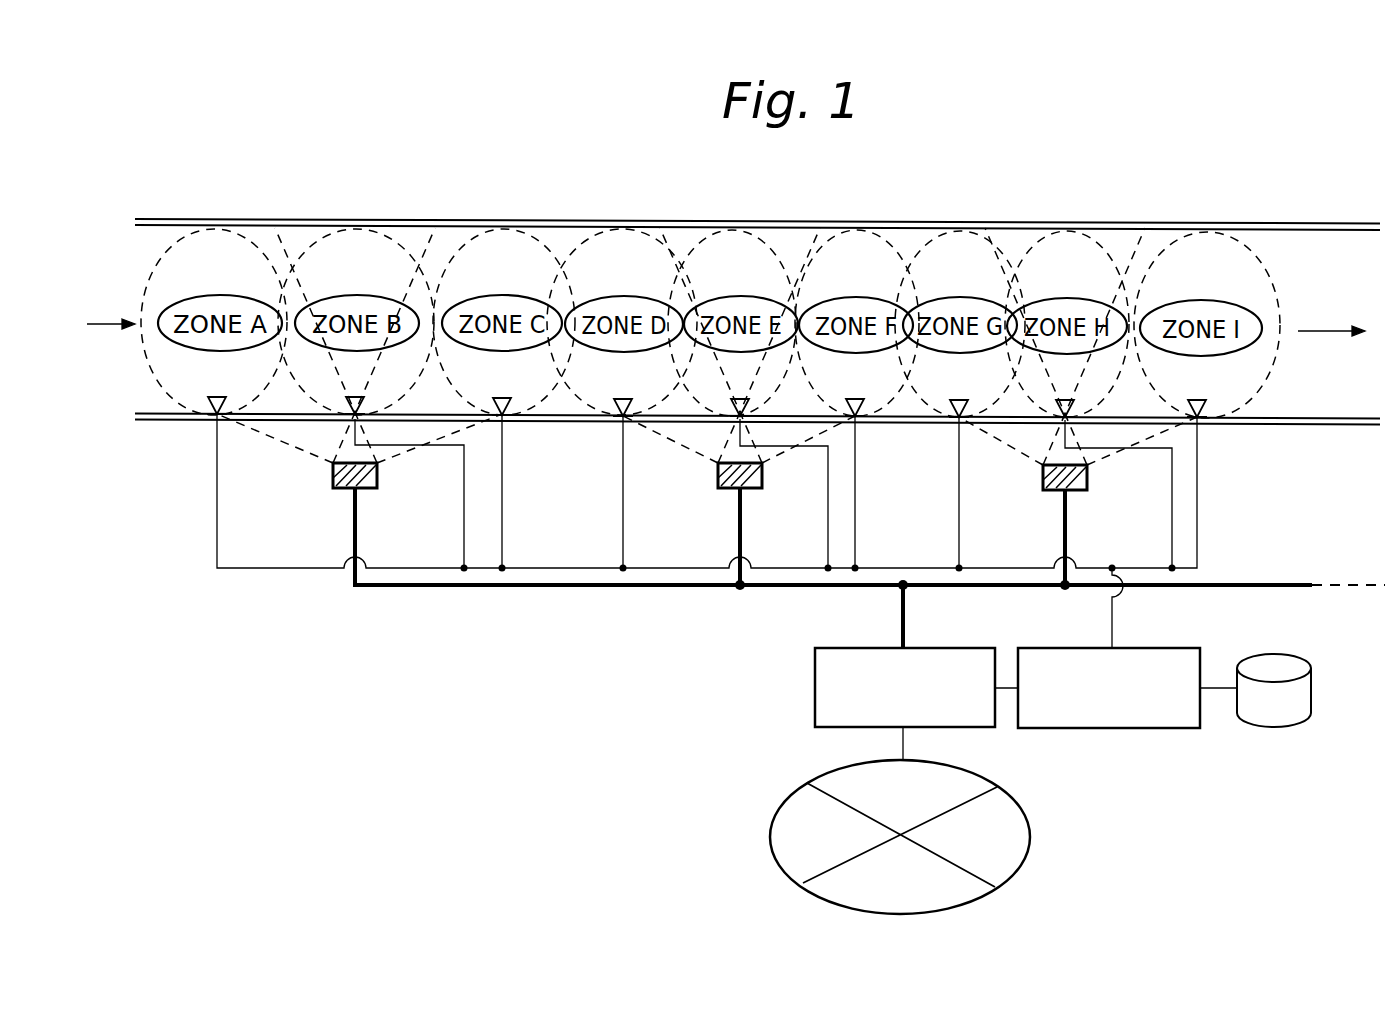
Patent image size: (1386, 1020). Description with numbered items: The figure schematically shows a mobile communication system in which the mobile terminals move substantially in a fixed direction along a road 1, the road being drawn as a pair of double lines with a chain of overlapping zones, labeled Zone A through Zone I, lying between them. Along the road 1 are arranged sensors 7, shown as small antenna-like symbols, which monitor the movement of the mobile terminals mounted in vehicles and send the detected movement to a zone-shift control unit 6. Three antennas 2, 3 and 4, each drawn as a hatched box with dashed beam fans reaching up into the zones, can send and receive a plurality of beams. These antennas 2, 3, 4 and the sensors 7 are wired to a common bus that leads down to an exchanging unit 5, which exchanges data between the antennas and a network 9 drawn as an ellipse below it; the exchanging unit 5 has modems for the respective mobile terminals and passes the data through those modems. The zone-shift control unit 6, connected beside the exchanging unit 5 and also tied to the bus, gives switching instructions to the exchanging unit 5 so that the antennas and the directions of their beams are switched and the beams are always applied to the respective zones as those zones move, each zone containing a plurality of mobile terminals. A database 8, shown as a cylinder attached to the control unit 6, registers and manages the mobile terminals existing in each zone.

The road 1 is at (180, 219).
The antenna 2 is at (342, 488).
The antenna 3 is at (727, 490).
The antenna 4 is at (1053, 492).
The exchanging unit 5 is at (950, 648).
The zone-shift control unit 6 is at (1155, 648).
The sensor 7 is at (214, 420).
The database 8 is at (1313, 691).
The network 9 is at (1027, 817).